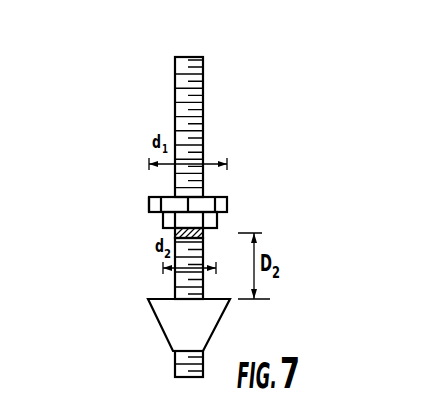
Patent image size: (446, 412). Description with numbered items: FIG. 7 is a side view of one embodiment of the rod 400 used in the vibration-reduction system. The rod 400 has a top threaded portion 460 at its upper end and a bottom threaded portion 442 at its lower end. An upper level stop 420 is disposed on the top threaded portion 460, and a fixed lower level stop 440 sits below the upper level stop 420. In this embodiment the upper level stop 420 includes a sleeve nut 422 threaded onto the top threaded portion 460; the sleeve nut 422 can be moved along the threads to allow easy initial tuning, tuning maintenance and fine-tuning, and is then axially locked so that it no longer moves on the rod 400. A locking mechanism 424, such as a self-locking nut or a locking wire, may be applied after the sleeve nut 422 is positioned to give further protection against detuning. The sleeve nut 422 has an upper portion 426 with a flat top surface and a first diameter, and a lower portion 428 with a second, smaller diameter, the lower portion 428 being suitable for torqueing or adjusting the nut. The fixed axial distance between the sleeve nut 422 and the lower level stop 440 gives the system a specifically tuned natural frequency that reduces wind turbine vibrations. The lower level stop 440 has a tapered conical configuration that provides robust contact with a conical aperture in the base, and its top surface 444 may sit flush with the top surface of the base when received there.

The rod 400 is at (283, 92).
The top threaded portion 460 is at (175, 73).
The upper level stop 420 is at (196, 193).
The sleeve nut 422 is at (207, 203).
The locking mechanism 424 is at (168, 224).
The upper portion 426 is at (157, 202).
The lower portion 428 is at (185, 217).
The lower level stop 440 is at (149, 302).
The top surface 444 is at (163, 298).
The bottom threaded portion 442 is at (183, 358).